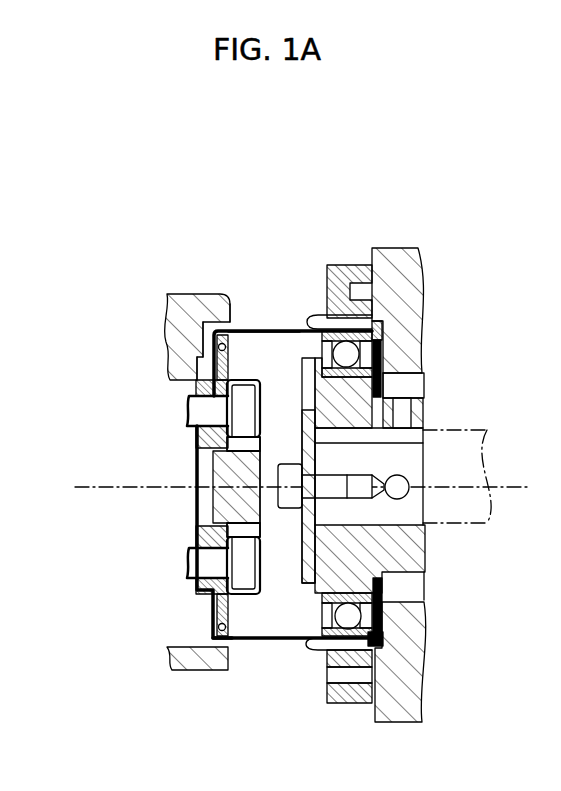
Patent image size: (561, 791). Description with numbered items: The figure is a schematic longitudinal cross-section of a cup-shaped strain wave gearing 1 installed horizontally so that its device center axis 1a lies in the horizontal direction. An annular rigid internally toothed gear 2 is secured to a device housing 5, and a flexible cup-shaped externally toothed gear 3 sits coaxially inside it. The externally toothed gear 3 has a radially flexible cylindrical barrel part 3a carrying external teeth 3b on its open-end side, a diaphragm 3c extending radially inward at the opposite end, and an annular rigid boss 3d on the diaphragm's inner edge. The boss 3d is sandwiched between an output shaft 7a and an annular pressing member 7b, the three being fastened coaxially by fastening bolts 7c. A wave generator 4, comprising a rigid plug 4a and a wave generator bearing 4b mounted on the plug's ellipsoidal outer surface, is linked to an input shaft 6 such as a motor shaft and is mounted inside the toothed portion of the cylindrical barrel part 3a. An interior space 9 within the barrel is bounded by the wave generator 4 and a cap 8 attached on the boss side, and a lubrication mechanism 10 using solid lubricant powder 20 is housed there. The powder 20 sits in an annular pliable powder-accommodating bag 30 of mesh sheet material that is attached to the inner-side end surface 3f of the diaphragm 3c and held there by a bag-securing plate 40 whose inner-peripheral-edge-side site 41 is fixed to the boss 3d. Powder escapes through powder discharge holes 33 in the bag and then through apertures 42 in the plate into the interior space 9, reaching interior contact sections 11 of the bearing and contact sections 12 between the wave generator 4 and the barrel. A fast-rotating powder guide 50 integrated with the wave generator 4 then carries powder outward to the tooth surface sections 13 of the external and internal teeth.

The strain wave gearing 1 is at (248, 241).
The device center axis 1a is at (83, 498).
The internally toothed gear 2 is at (311, 298).
The externally toothed gear 3 is at (277, 314).
The cylindrical barrel part 3a is at (268, 338).
The external teeth 3b is at (350, 318).
The diaphragm 3c is at (206, 362).
The boss 3d is at (204, 380).
The inner-side end surface 3f is at (208, 340).
The wave generator 4 is at (404, 388).
The plug 4a is at (385, 371).
The wave generator bearing 4b is at (377, 328).
The device housing 5 is at (405, 238).
The input shaft 6 is at (465, 422).
The output shaft 7a is at (195, 282).
The pressing member 7b is at (192, 437).
The fastening bolts 7c is at (191, 399).
The cap 8 is at (203, 471).
The interior space 9 is at (289, 553).
The lubrication mechanism 10 is at (260, 627).
The interior contact sections 11 is at (372, 597).
The contact sections 12 is at (388, 643).
The tooth surface sections 13 is at (352, 657).
The solid lubricant powder 20 is at (203, 593).
The powder-accommodating bag 30 is at (204, 608).
The powder discharge holes 33 is at (214, 647).
The bag-securing plate 40 is at (242, 625).
The inner-peripheral-edge-side site 41 is at (233, 583).
The apertures 42 is at (235, 601).
The powder guide 50 is at (391, 614).